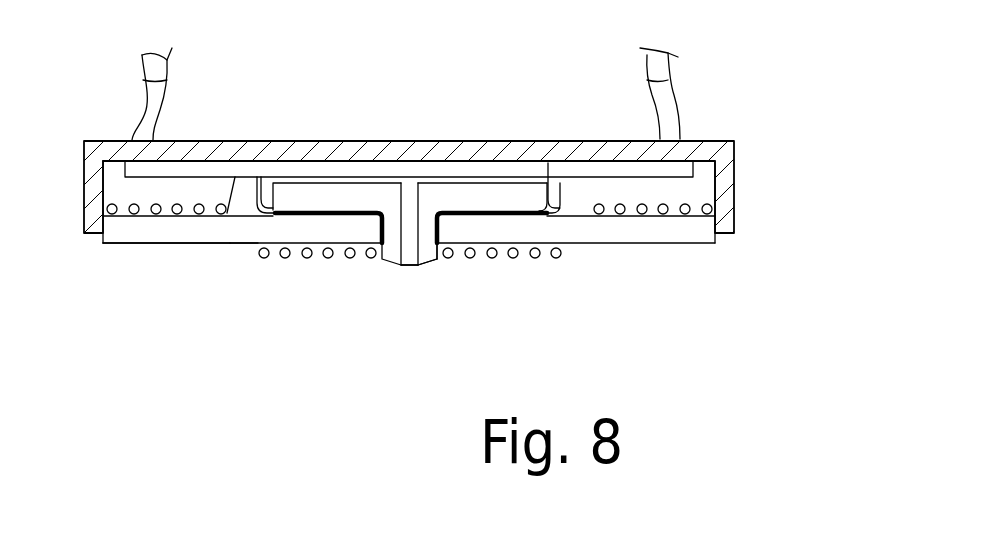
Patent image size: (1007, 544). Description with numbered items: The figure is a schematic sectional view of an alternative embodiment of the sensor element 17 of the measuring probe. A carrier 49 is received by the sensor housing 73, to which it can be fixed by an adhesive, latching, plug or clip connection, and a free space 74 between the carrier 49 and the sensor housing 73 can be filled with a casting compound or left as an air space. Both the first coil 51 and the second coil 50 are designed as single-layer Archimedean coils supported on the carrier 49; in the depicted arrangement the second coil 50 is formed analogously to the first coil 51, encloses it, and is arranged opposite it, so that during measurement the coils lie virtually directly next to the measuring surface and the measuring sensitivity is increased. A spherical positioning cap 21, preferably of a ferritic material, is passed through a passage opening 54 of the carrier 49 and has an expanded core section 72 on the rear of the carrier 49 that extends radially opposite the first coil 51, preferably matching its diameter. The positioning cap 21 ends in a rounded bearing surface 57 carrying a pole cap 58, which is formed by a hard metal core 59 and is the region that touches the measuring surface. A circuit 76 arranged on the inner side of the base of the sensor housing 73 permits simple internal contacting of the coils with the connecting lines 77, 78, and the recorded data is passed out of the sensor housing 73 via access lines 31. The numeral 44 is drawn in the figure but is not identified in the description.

The sensor element 17 is at (747, 93).
The spherical positioning cap 21 is at (371, 301).
The access lines 31 is at (137, 97).
The carrier 44 is at (245, 256).
The carrier 49 is at (688, 232).
The second coil 50 is at (230, 258).
The first coil 51 is at (380, 262).
The passage opening 54 is at (425, 235).
The rounded bearing surface 57 is at (418, 268).
The pole cap 58 is at (408, 268).
The hard metal core 59 is at (410, 197).
The core section 72 is at (470, 197).
The sensor housing 73 is at (725, 202).
The free space 74 is at (637, 193).
The circuit 76 is at (247, 172).
The connecting line 77 is at (227, 190).
The connecting line 78 is at (268, 198).